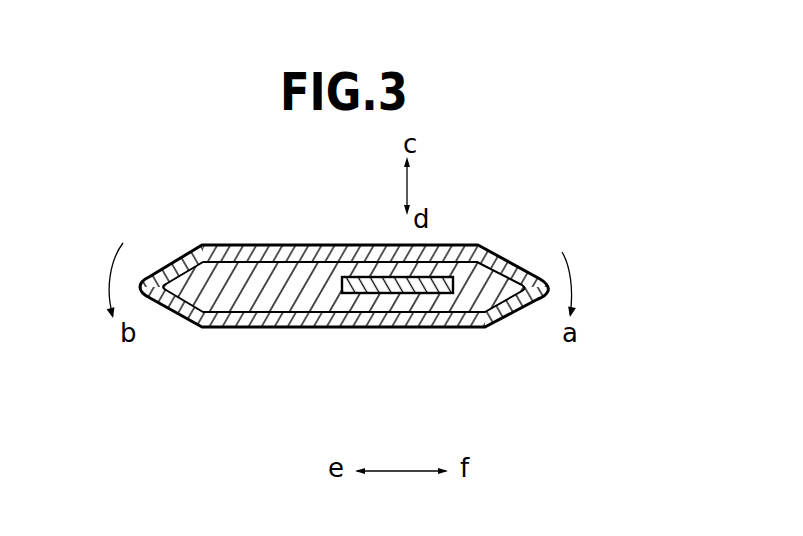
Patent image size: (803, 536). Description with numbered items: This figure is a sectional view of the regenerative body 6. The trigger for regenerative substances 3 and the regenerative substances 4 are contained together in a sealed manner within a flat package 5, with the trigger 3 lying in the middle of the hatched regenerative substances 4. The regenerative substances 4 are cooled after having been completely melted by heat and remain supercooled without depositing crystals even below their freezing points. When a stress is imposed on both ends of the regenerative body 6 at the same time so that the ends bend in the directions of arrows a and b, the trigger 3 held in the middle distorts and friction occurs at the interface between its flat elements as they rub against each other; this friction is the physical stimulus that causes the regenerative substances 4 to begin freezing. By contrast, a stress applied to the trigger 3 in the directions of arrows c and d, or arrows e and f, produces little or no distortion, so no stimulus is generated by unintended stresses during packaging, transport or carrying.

The trigger for regenerative substances 3 is at (423, 283).
The regenerative substances 4 is at (280, 292).
The flat package 5 is at (298, 250).
The regenerative body 6 is at (462, 246).